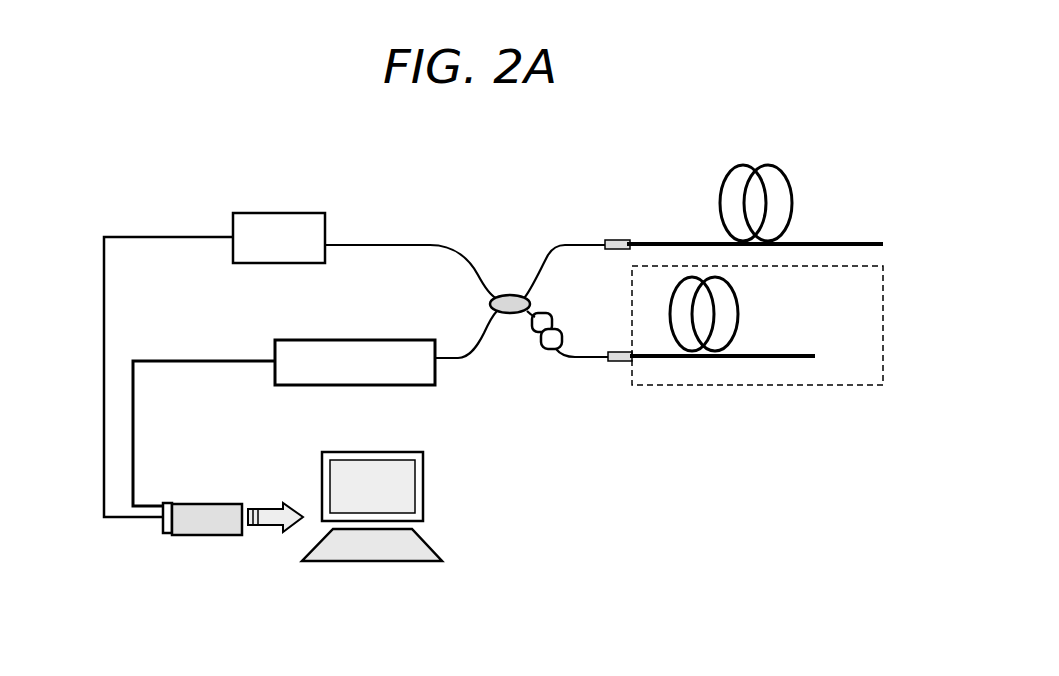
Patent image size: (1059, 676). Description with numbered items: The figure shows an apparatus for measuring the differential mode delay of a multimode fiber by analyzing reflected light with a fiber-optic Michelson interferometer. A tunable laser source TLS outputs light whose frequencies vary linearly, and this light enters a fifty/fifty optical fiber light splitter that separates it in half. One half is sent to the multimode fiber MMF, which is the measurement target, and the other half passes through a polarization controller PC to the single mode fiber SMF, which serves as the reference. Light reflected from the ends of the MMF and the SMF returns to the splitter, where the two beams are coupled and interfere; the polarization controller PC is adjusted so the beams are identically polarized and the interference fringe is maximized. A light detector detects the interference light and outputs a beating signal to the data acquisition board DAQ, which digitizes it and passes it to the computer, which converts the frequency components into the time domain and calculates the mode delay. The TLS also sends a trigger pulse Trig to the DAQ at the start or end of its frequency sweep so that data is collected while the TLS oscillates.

The tunable laser source TLS is at (279, 238).
The polarization controller PC is at (560, 322).
The multimode fiber MMF is at (755, 189).
The single mode fiber SMF is at (756, 325).
The trigger signal Trig is at (142, 377).
The data acquisition board DAQ is at (233, 505).
The element computer is at (419, 506).